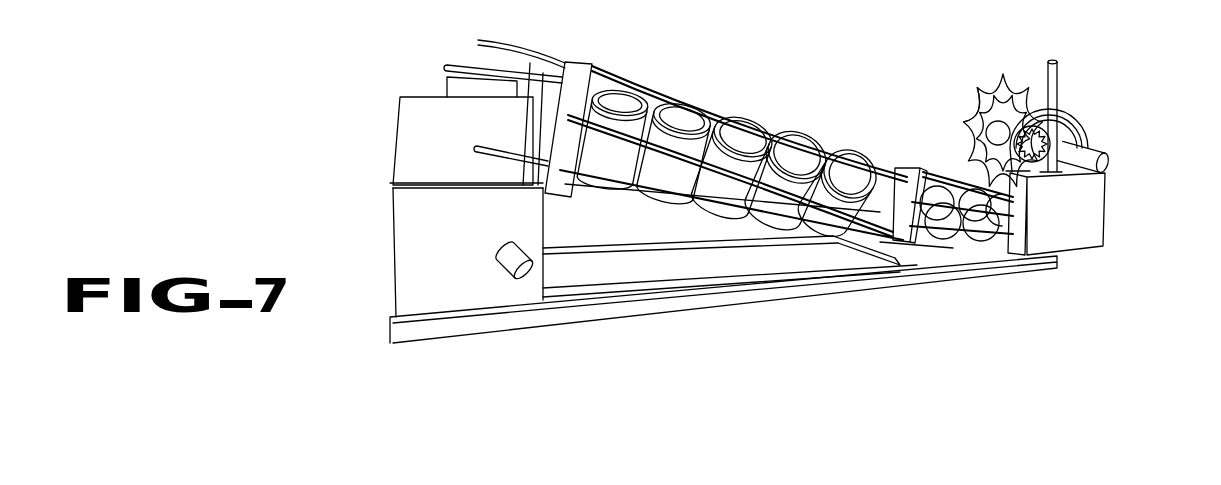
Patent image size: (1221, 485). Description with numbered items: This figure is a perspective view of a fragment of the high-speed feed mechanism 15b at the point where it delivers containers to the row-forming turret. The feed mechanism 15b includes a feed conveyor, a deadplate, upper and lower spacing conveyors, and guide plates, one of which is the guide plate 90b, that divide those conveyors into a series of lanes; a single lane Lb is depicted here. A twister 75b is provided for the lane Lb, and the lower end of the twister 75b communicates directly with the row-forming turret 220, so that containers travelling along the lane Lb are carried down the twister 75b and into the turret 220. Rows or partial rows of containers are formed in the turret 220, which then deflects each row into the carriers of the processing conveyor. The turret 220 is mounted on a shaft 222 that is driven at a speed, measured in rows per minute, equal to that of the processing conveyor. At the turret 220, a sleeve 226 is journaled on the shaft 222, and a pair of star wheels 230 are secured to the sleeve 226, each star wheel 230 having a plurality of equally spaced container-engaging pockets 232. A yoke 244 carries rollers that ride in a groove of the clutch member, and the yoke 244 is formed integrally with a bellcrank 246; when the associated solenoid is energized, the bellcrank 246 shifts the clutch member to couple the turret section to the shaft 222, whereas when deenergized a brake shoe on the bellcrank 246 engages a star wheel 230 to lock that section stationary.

The lane Lb is at (434, 86).
The guide plate 90b is at (400, 133).
The twister 75b is at (647, 75).
The high-speed feed mechanism 15b is at (790, 96).
The row-forming turret 220 is at (1043, 154).
The shaft 222 is at (1108, 159).
The sleeve 226 is at (993, 127).
The star wheel 230 is at (962, 142).
The container-engaging pocket 232 is at (1030, 88).
The yoke 244 is at (1086, 128).
The bellcrank 246 is at (1058, 78).